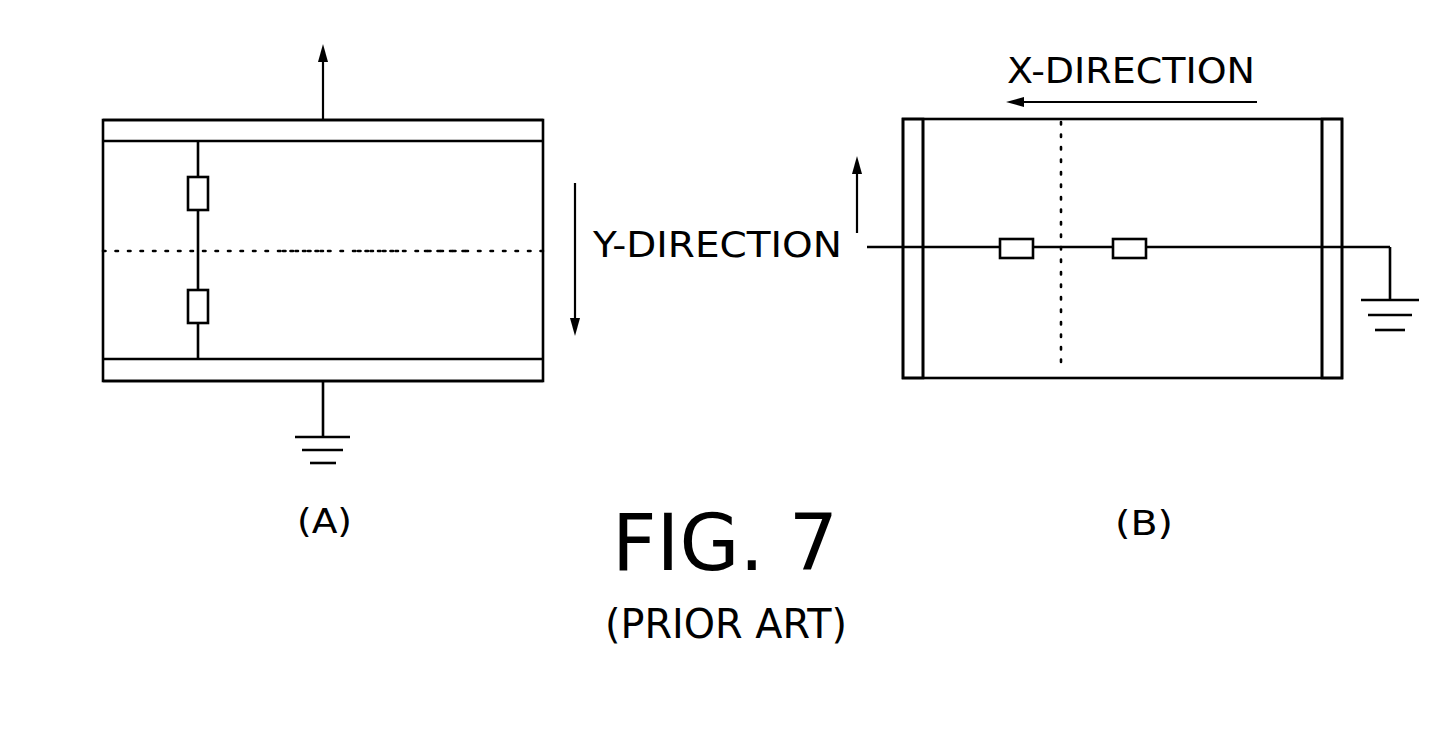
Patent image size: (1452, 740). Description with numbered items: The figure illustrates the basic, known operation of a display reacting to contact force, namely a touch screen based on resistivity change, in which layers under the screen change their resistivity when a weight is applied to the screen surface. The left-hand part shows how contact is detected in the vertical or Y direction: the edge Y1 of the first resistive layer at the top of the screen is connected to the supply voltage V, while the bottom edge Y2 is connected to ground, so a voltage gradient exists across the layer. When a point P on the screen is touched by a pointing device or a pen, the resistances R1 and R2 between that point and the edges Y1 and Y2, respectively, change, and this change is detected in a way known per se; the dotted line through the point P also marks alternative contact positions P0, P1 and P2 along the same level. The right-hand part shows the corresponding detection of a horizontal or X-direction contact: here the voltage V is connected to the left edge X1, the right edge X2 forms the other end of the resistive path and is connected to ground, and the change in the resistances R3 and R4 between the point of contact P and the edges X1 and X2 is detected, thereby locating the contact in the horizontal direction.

The top edge of first resistive layer Y1 is at (137, 120).
The bottom edge of first resistive layer Y2 is at (150, 382).
The left edge of resistive layer X1 is at (903, 337).
The right edge of resistive layer X2 is at (1342, 147).
The resistance between point P and edge y1 R1 is at (223, 193).
The resistance between point P and edge y2 R2 is at (223, 306).
The resistance between point P and left edge R3 is at (1020, 227).
The resistance between point P and right edge R4 is at (1127, 227).
The supply voltage V is at (608, 133).
The point of contact P is at (599, 244).
The touch point position 0 P0 is at (306, 230).
The touch point position 1 P1 is at (379, 230).
The touch point position 2 P2 is at (450, 230).